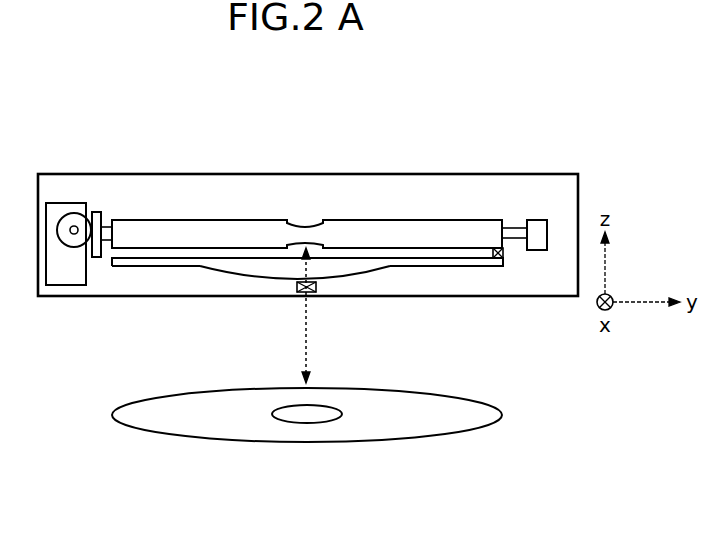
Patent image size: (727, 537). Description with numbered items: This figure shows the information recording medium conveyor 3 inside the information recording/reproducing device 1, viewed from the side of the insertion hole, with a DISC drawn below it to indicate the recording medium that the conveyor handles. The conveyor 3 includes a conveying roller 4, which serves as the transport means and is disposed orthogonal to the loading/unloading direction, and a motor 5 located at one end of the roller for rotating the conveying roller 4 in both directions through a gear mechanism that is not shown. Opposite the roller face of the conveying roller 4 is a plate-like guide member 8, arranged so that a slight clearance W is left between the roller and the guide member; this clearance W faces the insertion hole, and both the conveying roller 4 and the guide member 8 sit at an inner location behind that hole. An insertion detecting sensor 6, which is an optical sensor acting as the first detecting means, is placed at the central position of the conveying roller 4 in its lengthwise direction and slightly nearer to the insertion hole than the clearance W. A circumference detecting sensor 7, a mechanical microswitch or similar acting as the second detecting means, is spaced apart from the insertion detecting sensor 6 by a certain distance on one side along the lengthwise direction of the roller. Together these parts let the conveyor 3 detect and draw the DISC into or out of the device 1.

The information recording/reproducing device 1 is at (468, 176).
The information recording medium conveyor 3 is at (357, 208).
The conveying roller 4 is at (212, 225).
The motor 5 is at (69, 272).
The insertion detecting sensor 6 is at (297, 287).
The circumference detecting sensor 7 is at (503, 254).
The guide member 8 is at (362, 268).
The clearance W is at (203, 259).
The optical disc DISC is at (325, 443).